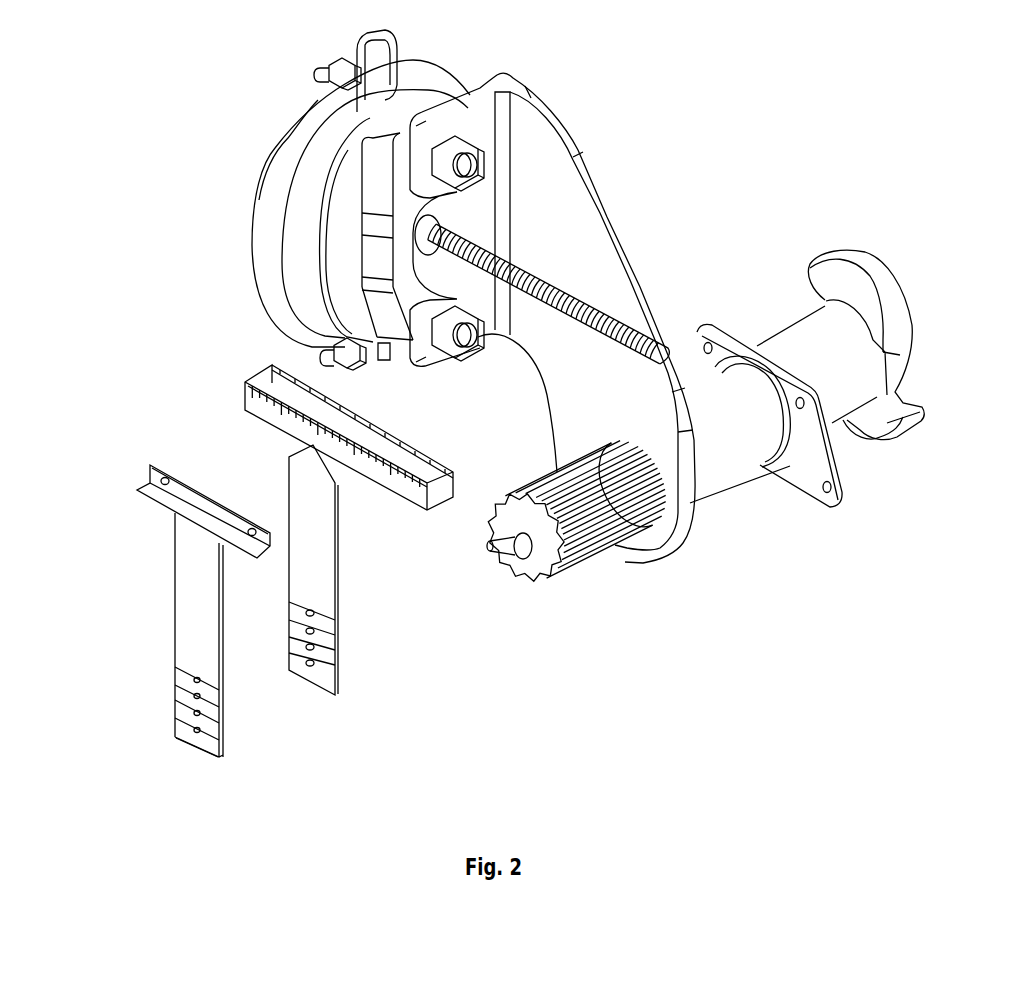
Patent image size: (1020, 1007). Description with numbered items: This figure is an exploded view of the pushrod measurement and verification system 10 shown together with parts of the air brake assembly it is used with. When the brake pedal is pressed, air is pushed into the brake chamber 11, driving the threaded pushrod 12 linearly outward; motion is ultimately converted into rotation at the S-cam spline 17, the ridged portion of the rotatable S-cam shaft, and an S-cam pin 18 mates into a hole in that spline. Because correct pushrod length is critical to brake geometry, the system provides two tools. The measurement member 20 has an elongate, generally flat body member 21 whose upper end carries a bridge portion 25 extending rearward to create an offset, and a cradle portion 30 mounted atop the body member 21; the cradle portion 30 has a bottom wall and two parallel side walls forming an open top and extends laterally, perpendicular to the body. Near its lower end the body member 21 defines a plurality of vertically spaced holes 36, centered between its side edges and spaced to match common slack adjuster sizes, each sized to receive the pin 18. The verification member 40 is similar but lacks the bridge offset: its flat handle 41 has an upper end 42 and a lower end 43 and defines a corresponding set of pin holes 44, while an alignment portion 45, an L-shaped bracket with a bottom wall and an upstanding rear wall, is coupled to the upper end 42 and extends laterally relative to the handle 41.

The pushrod measurement and verification system 10 is at (155, 372).
The brake chamber 11 is at (287, 178).
The pushrod 12 is at (631, 330).
The S-cam spline 17 is at (596, 558).
The S-cam pin 18 is at (523, 576).
The measurement member 20 is at (361, 593).
The body member 21 is at (312, 552).
The bridge portion 25 is at (314, 455).
The cradle portion 30 is at (347, 471).
The holes 36 is at (313, 652).
The verification member 40 is at (159, 626).
The handle 41 is at (198, 585).
The upper end 42 is at (172, 530).
The lower end 43 is at (198, 752).
The pin holes 44 is at (193, 713).
The alignment portion 45 is at (159, 498).